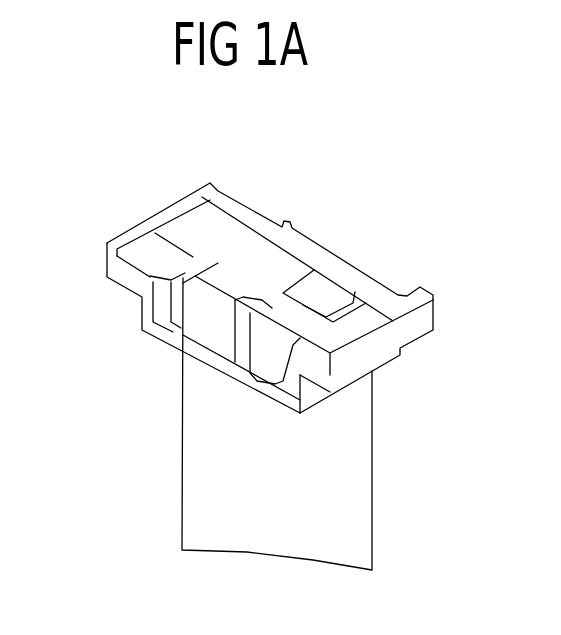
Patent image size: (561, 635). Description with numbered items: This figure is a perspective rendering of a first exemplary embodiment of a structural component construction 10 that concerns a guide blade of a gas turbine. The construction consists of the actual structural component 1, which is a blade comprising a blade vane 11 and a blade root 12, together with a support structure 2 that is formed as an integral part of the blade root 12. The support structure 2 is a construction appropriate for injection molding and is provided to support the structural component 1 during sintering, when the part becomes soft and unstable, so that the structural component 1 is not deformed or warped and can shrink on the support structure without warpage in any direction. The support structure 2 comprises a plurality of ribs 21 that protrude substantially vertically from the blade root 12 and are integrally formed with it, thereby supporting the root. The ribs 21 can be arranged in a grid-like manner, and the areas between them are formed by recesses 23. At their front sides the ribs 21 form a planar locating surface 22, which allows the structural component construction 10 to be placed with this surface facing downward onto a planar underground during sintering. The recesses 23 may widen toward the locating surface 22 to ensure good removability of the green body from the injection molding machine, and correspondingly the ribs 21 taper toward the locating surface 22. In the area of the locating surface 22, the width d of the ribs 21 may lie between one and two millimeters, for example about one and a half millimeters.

The structural component 1 is at (243, 351).
The structural component construction 10 is at (243, 272).
The blade vane 11 is at (355, 485).
The blade root 12 is at (159, 330).
The support structure 2 is at (260, 273).
The ribs 21 is at (171, 303).
The planar locating surface 22 is at (270, 228).
The recesses 23 is at (322, 283).
The width of the ribs d is at (202, 295).